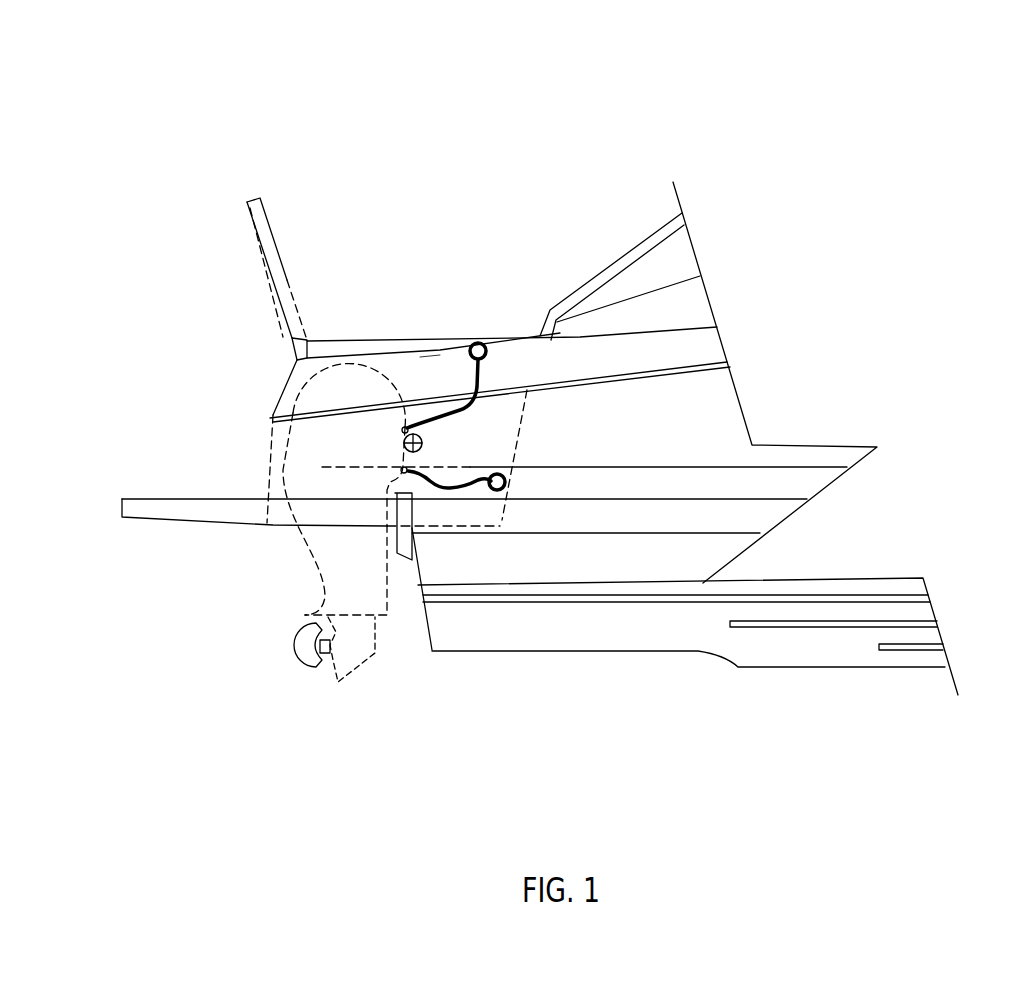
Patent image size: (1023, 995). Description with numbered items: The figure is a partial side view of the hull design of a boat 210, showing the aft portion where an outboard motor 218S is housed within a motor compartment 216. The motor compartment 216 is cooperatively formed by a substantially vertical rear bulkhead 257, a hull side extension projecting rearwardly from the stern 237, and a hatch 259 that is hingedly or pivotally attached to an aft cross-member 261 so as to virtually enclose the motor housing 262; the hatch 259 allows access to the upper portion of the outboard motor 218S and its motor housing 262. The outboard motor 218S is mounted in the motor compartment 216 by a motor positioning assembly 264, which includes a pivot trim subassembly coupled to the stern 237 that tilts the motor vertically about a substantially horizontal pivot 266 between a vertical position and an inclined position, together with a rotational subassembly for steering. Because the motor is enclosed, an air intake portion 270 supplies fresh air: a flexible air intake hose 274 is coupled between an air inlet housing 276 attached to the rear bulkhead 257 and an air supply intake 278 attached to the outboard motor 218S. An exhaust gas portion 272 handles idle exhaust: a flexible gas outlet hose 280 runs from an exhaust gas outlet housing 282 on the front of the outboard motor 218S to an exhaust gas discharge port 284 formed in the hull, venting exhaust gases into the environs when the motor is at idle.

The boat 210 is at (763, 210).
The motor compartment 216 is at (353, 377).
The outboard motor 218S is at (305, 268).
The stern 237 is at (523, 317).
The rear bulkhead 257 is at (520, 433).
The hatch 259 is at (383, 370).
The aft cross-member 261 is at (282, 337).
The motor housing 262 is at (340, 393).
The motor positioning assembly 264 is at (348, 557).
The horizontal pivot 266 is at (420, 450).
The air intake portion 270 is at (430, 357).
The exhaust gas portion 272 is at (502, 377).
The flexible air intake hose 274 is at (450, 413).
The air inlet housing 276 is at (478, 342).
The air supply intake 278 is at (270, 418).
The flexible gas outlet hose 280 is at (448, 488).
The exhaust gas outlet housing 282 is at (400, 468).
The exhaust gas discharge port 284 is at (505, 487).